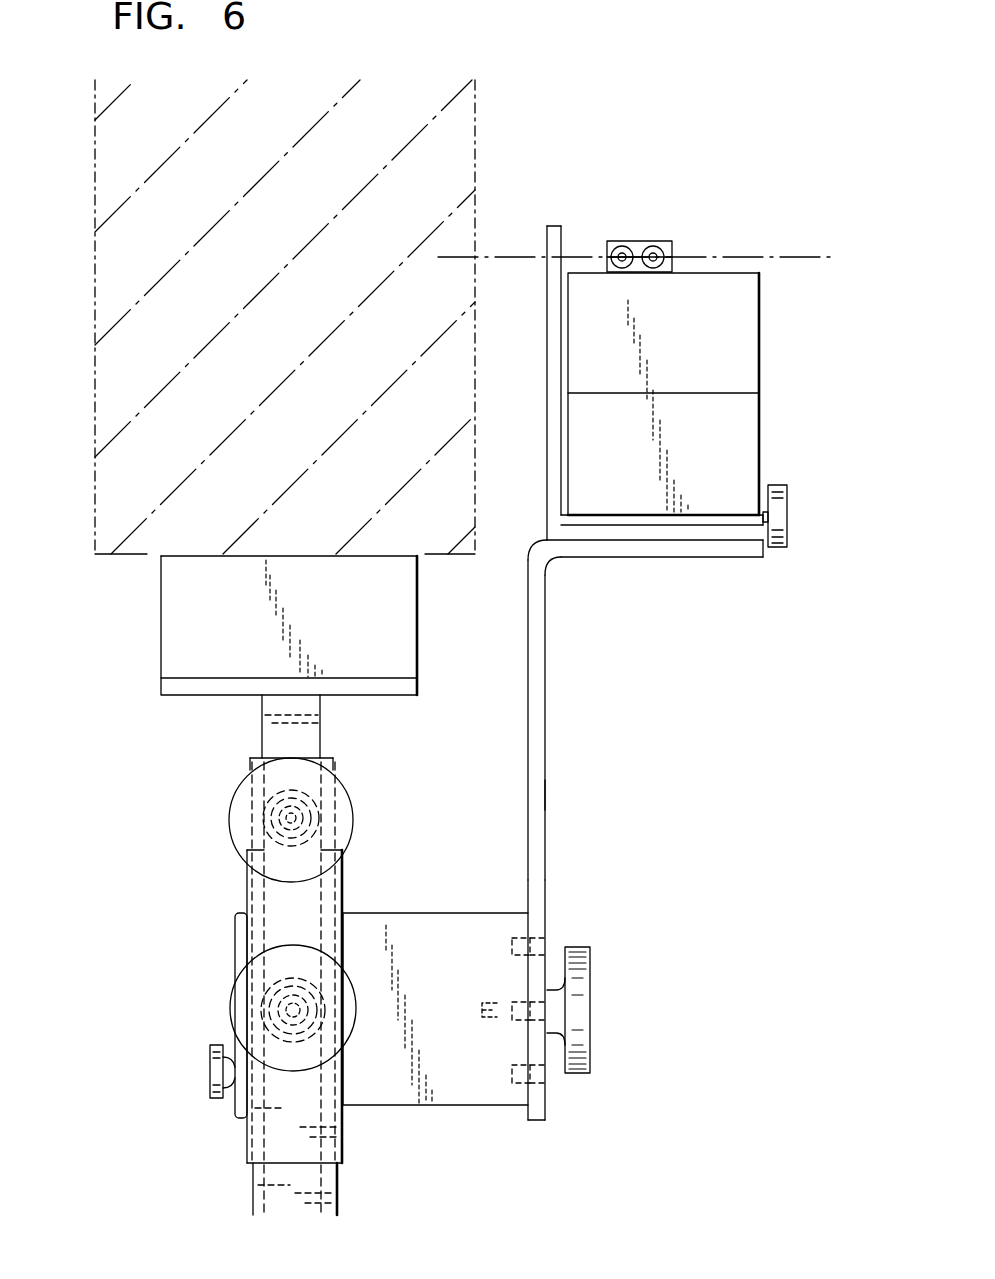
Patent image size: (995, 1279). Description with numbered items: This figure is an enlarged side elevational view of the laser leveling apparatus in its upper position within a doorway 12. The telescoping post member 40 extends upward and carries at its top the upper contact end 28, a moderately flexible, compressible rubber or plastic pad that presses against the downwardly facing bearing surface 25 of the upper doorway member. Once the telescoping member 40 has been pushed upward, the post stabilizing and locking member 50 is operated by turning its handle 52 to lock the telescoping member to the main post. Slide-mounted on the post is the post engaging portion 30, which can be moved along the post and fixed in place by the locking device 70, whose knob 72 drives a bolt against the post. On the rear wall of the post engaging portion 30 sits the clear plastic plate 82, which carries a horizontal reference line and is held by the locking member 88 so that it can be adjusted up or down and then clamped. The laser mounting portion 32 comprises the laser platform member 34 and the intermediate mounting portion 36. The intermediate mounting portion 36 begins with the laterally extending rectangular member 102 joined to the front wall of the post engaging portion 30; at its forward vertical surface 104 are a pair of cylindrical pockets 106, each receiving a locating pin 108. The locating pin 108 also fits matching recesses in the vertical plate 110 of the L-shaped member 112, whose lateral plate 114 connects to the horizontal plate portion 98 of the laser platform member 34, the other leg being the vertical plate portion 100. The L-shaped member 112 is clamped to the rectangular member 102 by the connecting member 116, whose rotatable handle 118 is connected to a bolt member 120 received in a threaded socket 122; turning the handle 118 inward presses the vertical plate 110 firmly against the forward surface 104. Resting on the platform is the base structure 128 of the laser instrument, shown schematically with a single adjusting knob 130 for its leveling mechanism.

The doorway 12 is at (460, 148).
The downwardly facing bearing surface 25 is at (132, 556).
The upper contact end 28 is at (178, 618).
The post engaging portion 30 is at (245, 892).
The laser mounting portion 32 is at (561, 234).
The laser platform member 34 is at (702, 550).
The intermediate mounting portion 36 is at (535, 718).
The telescoping post member 40 is at (273, 730).
The post stabilizing and locking member 50 is at (225, 794).
The handle 52 is at (234, 820).
The locking device 70 is at (223, 986).
The knob 72 is at (242, 1010).
The clear plastic plate 82 is at (235, 1100).
The locking member 88 is at (210, 1068).
The horizontal plate portion 98 is at (722, 534).
The vertical plate portion 100 is at (548, 393).
The laterally extending rectangular member 102 is at (440, 928).
The forward vertical surface 104 is at (532, 928).
The cylindrical pockets 106 is at (513, 1070).
The locating pin 108 is at (550, 1082).
The vertical plate 110 is at (540, 890).
The L-shaped member 112 is at (557, 795).
The lateral plate 114 is at (653, 553).
The connecting member 116 is at (606, 975).
The rotatable handle 118 is at (583, 1007).
The bolt member 120 is at (515, 1015).
The threaded socket 122 is at (487, 1005).
The base structure 128 is at (748, 463).
The adjusting knob 130 is at (783, 507).